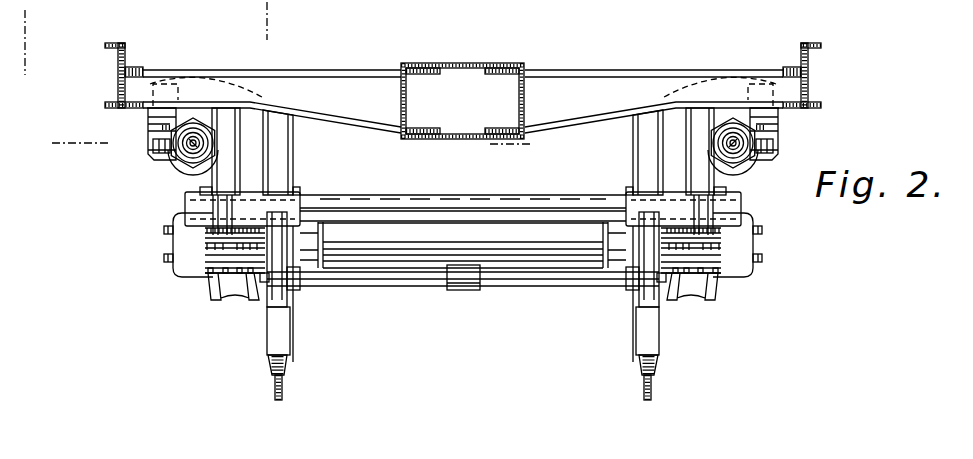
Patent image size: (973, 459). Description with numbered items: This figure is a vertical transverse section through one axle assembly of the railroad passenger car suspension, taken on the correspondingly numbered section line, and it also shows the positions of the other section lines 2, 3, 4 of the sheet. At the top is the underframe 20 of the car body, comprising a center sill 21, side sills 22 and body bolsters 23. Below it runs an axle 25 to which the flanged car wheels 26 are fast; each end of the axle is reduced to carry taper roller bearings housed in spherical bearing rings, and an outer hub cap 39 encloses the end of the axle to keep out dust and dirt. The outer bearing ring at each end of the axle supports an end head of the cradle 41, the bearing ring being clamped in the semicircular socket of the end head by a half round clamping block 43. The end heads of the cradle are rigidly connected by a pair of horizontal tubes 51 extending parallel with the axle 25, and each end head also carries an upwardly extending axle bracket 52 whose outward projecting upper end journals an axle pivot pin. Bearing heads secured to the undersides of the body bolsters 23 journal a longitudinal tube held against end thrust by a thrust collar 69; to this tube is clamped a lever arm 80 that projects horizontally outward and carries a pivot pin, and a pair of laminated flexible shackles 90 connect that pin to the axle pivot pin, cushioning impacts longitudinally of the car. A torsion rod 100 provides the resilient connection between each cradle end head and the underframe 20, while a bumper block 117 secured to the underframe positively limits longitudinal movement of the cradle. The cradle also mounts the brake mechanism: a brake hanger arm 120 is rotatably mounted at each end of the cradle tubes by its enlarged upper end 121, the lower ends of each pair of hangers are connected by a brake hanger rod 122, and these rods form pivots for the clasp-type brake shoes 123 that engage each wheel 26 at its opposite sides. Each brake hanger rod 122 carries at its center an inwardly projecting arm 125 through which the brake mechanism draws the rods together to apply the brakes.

The section line 2- 2 is at (46, 58).
The section line 3- 3 is at (291, 25).
The section line 4- 4 is at (548, 162).
The underframe 20 is at (580, 65).
The center sill 21 is at (512, 95).
The side sill 22 is at (126, 53).
The body bolster 23 is at (349, 70).
The axle 25 is at (462, 231).
The flanged car wheel 26 is at (293, 338).
The outer hub cap 39 is at (178, 242).
The cradle 41 is at (346, 189).
The half round clamping block 43 is at (235, 298).
The horizontal tube 51 is at (589, 199).
The axle bracket 52 is at (213, 78).
The thrust collar 69 is at (212, 130).
The lever arm 80 is at (180, 163).
The flexible shackle 90 is at (144, 116).
The torsion rod 100 is at (166, 146).
The bumper block 117 is at (228, 133).
The brake hanger arm 120 is at (317, 233).
The enlarged upper end 121 is at (287, 190).
The brake hanger rod 122 is at (429, 279).
The brake shoe 123 is at (290, 292).
The arm 125 is at (462, 289).